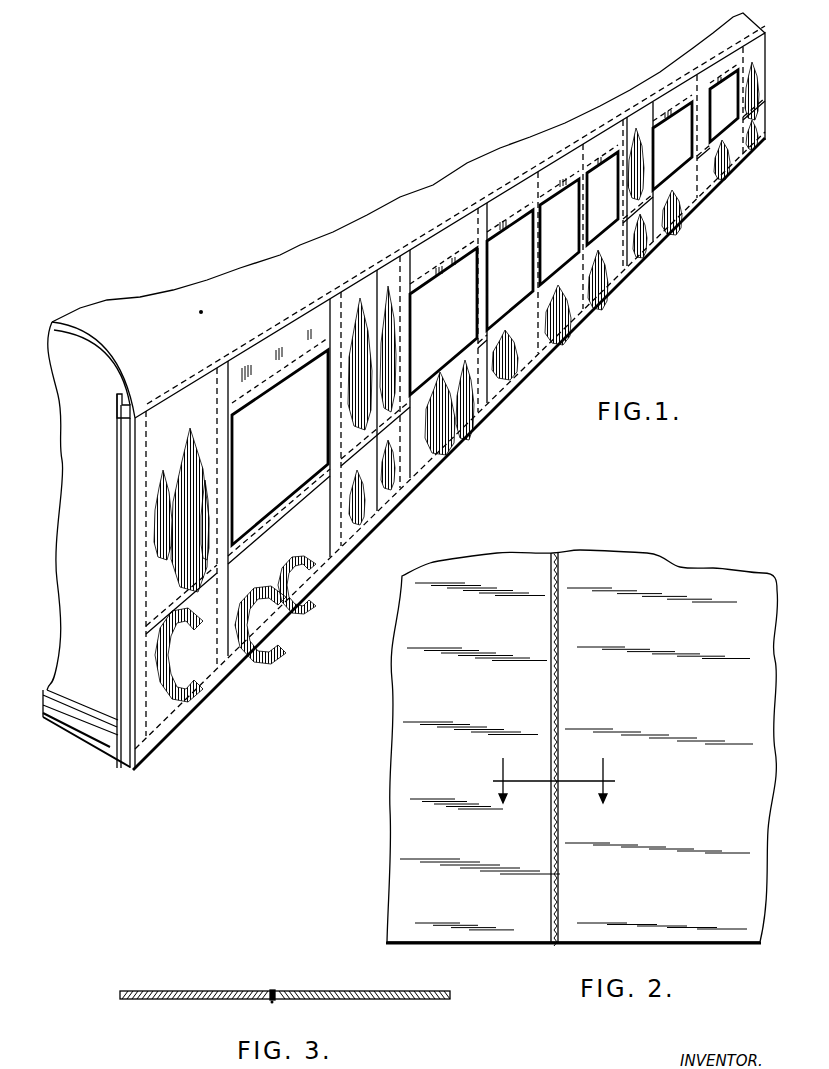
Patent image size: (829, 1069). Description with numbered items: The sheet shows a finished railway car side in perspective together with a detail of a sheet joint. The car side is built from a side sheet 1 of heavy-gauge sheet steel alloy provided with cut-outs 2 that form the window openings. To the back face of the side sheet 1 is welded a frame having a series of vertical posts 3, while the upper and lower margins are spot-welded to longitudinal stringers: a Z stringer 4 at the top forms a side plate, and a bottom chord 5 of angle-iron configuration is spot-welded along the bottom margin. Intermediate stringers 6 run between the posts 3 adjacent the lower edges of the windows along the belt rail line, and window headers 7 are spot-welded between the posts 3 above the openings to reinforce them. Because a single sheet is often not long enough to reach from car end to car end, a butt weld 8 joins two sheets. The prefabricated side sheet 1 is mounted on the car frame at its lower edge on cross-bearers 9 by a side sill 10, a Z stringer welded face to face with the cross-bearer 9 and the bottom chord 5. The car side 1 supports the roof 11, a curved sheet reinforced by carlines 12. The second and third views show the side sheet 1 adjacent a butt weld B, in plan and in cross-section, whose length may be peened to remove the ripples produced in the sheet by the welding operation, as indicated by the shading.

In FIG. 1, the side sheet 1 is at (240, 612).
In FIG. 2, the side sheet 1 is at (686, 578).
In FIG. 3, the side sheet 1 is at (330, 991).
In FIG. 1, the cut-outs 2 is at (485, 307).
In FIG. 1, the vertical posts 3 is at (117, 497).
In FIG. 2, the vertical posts 3 is at (554, 796).
In FIG. 1, the Z stringer 4 is at (116, 402).
In FIG. 1, the bottom chord 5 is at (114, 768).
In FIG. 1, the stringers 6 is at (145, 619).
In FIG. 1, the window headers 7 is at (302, 376).
In FIG. 1, the butt weld 8 is at (375, 492).
In FIG. 1, the cross-bearers 9 is at (75, 706).
In FIG. 1, the side sill 10 is at (97, 739).
In FIG. 1, the roof 11 is at (203, 297).
In FIG. 1, the carlines 12 is at (87, 347).
In FIG. 2, the butt weld B is at (556, 556).
In FIG. 3, the butt weld B is at (274, 1001).